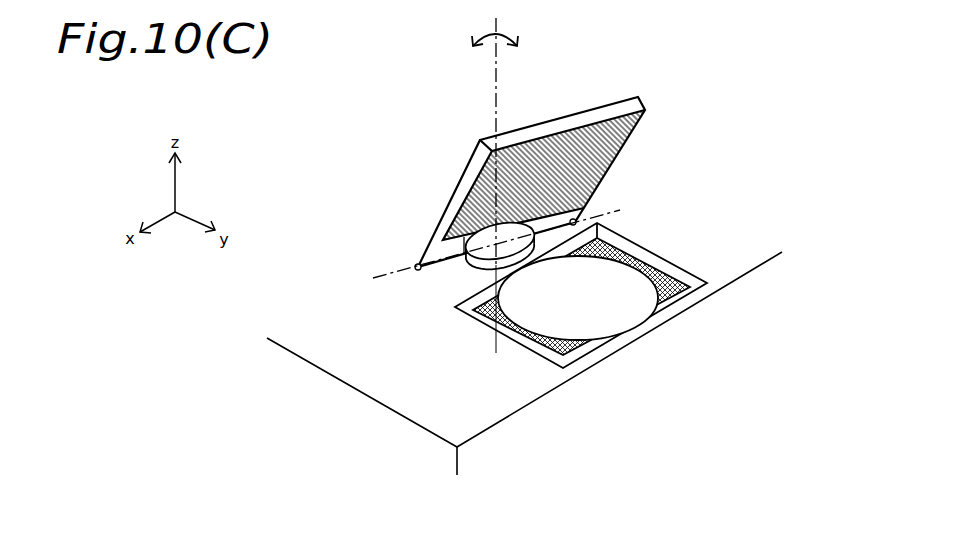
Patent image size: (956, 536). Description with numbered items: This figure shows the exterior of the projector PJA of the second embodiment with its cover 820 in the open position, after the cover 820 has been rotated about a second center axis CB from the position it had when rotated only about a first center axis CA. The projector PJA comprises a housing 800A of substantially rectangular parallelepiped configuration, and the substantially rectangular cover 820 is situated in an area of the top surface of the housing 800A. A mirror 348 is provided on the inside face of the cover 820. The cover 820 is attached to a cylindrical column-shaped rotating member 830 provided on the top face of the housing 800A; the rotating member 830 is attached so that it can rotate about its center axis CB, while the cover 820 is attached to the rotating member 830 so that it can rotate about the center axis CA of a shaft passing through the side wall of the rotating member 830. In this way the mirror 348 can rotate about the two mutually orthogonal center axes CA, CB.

The cover 820 is at (566, 158).
The mirror 348 is at (605, 147).
The rotating member 830 is at (482, 260).
The housing 800A is at (762, 262).
The first center axis CA is at (390, 272).
The second center axis CB is at (492, 72).
The projector PJA is at (807, 322).